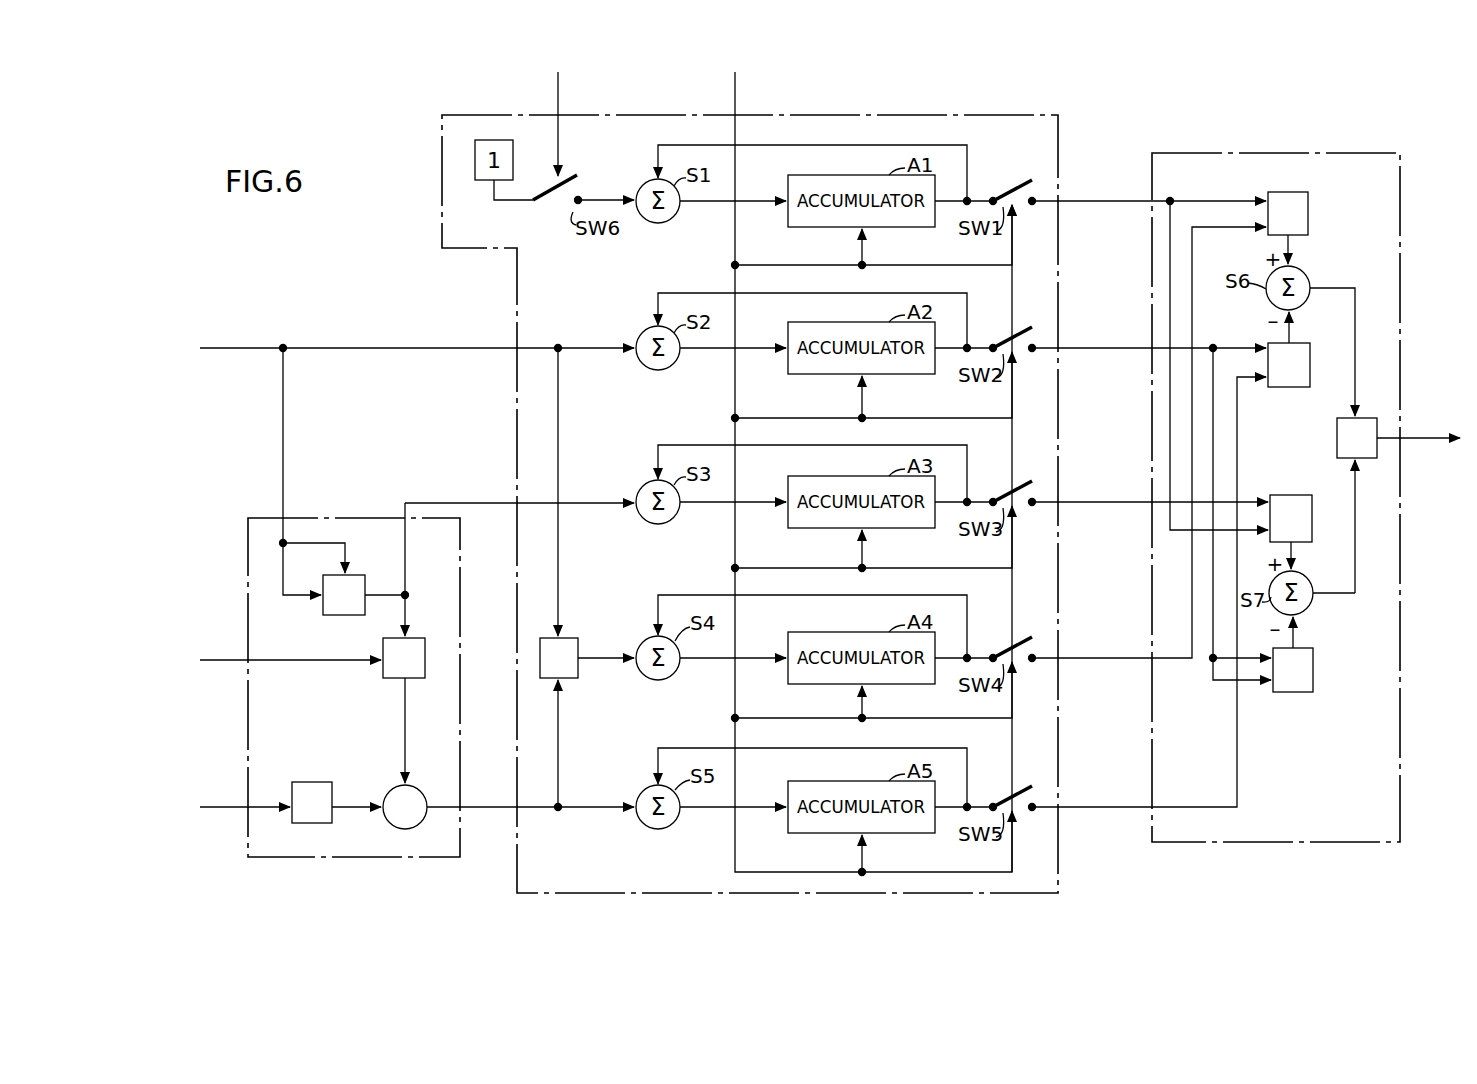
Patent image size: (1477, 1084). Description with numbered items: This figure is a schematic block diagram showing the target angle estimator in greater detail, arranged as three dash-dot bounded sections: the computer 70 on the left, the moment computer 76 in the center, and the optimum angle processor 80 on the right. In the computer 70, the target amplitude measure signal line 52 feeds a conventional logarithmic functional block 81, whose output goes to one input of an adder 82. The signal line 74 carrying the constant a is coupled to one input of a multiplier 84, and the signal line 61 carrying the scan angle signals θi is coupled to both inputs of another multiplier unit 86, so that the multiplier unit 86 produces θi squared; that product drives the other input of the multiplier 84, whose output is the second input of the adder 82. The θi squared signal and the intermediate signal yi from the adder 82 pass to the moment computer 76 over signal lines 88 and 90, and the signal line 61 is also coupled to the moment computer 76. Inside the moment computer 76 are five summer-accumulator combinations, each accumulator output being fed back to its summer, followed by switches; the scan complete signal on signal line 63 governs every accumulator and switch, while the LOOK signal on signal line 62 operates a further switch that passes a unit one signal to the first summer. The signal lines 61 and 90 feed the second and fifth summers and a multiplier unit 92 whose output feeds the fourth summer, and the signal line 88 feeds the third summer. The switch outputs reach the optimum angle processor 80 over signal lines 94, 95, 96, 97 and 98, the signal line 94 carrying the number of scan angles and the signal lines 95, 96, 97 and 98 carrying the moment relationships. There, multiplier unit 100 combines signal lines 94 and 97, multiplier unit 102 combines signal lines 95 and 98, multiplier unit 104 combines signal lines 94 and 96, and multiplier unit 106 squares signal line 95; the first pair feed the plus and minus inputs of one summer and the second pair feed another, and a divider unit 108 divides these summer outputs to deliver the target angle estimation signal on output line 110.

The target amplitude measure signal line 52 is at (243, 805).
The signal line 61 is at (281, 352).
The signal line 62 is at (561, 97).
The signal line 63 is at (738, 97).
The computer 70 is at (323, 737).
The signal line 74 is at (238, 659).
The moment computer 76 is at (639, 870).
The optimum angle processor 80 is at (1296, 825).
The logarithmic functional block 81 is at (322, 783).
The adder 82 is at (420, 792).
The multiplier 84 is at (424, 646).
The multiplier unit 86 is at (364, 580).
The signal line 88 is at (403, 506).
The signal line 90 is at (503, 812).
The multiplier unit 92 is at (580, 645).
The signal line 94 is at (1110, 203).
The signal line 95 is at (1110, 350).
The signal line 96 is at (1110, 504).
The signal line 97 is at (1110, 660).
The signal line 98 is at (1110, 809).
The multiplier unit 100 is at (1305, 193).
The multiplier unit 102 is at (1294, 388).
The multiplier unit 104 is at (1296, 495).
The multiplier unit 106 is at (1300, 693).
The divider unit 108 is at (1336, 440).
The output line 110 is at (1445, 436).